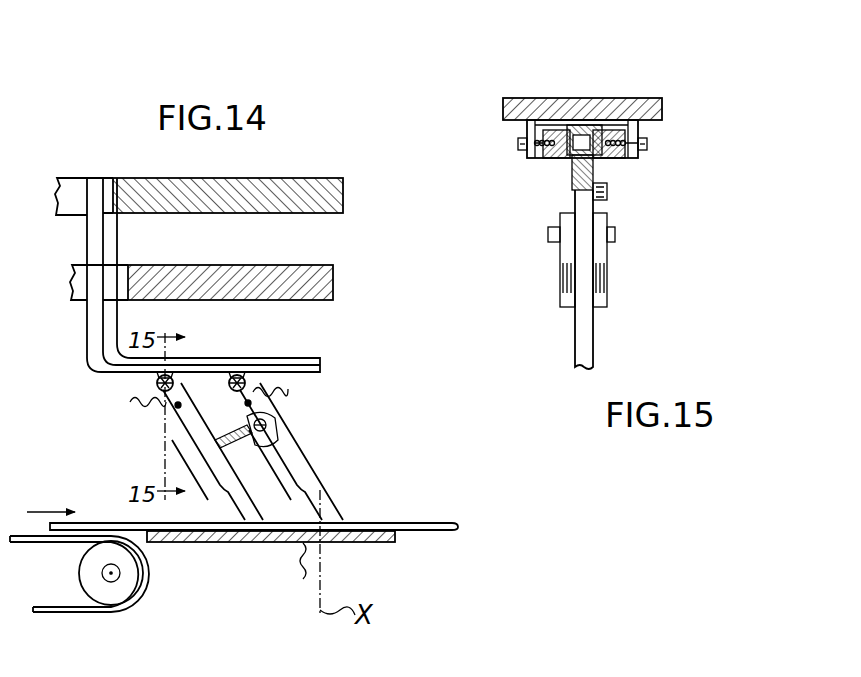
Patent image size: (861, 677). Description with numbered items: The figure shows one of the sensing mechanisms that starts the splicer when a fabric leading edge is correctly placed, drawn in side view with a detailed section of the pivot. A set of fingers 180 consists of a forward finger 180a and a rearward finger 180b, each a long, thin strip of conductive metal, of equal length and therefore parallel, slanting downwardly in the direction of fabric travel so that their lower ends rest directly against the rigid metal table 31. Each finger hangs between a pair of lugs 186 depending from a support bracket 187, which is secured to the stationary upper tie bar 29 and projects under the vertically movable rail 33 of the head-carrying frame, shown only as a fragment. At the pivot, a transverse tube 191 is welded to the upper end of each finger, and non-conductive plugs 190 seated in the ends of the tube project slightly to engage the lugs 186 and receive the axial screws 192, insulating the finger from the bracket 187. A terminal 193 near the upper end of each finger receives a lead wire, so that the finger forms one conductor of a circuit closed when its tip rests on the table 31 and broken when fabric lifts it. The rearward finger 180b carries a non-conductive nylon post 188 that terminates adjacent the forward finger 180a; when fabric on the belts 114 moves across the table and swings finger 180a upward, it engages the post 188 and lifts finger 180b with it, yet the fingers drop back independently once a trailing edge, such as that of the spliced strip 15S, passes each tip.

In FIG. 14, the tie plate 29 is at (257, 205).
In FIG. 14, the rail 33 is at (267, 287).
In FIG. 14, the support bracket 187 is at (108, 258).
In FIG. 15, the support bracket 187 is at (600, 98).
In FIG. 14, the lugs 186 is at (196, 372).
In FIG. 15, the lugs 186 is at (527, 127).
In FIG. 14, the axial screws 192 is at (150, 378).
In FIG. 15, the axial screws 192 is at (520, 145).
In FIG. 14, the terminal 193 is at (248, 403).
In FIG. 15, the terminal 193 is at (607, 195).
In FIG. 14, the set of fingers 180 is at (293, 417).
In FIG. 15, the set of fingers 180 is at (562, 200).
In FIG. 14, the forward finger 180a is at (237, 493).
In FIG. 15, the forward finger 180a is at (583, 317).
In FIG. 14, the rearward finger 180b is at (317, 487).
In FIG. 15, the rearward finger 180b is at (636, 278).
In FIG. 14, the post 188 is at (267, 453).
In FIG. 15, the post 188 is at (602, 295).
In FIG. 15, the plugs 190 is at (547, 157).
In FIG. 15, the transverse tube 191 is at (615, 130).
In FIG. 14, the spliced strip of fabric 15S is at (400, 521).
In FIG. 14, the table 31 is at (363, 542).
In FIG. 14, the belts 114 is at (62, 542).